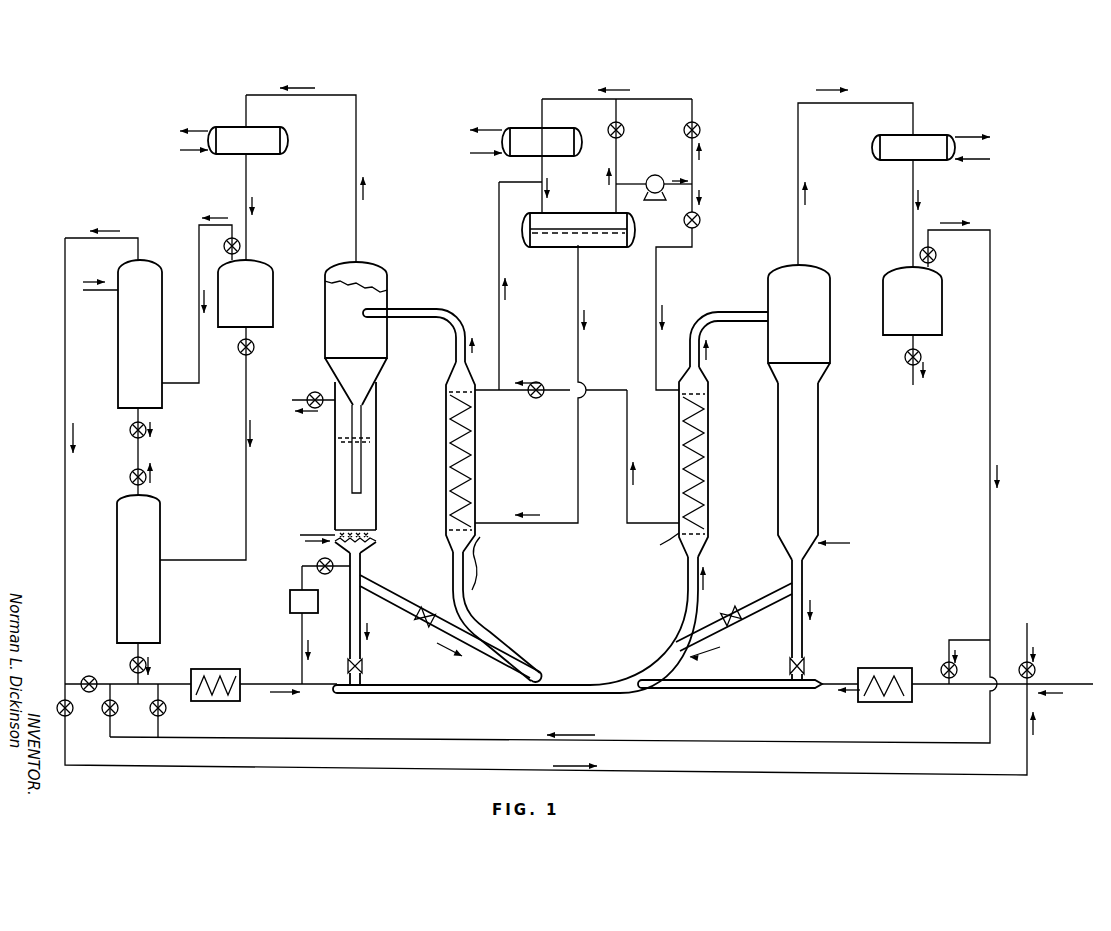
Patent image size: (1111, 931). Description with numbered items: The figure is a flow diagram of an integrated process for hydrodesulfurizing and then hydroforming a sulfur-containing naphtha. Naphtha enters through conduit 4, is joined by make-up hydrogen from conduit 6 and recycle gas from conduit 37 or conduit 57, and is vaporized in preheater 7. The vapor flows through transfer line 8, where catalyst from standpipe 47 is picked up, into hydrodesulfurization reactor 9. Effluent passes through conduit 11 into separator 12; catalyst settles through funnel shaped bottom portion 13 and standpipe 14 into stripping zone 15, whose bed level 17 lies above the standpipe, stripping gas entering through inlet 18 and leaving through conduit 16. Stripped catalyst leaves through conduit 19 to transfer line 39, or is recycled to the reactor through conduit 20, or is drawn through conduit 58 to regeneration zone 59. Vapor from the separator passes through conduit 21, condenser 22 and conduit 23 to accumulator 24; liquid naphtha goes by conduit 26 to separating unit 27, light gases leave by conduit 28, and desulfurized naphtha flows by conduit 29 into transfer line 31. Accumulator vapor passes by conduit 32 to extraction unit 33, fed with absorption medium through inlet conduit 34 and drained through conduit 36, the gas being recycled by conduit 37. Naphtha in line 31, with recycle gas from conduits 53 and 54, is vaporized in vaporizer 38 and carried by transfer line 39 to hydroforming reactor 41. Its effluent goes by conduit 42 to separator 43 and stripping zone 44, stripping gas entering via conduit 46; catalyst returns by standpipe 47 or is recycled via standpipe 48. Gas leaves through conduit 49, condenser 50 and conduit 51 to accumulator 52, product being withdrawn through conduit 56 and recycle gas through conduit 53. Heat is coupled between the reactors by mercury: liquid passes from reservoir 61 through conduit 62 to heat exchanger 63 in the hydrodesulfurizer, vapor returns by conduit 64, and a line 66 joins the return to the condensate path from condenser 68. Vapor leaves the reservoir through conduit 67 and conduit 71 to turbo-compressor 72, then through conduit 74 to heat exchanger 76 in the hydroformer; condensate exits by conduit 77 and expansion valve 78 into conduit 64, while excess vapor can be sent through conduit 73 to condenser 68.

The conduit 4 is at (920, 687).
The conduit 6 is at (1025, 652).
The preheater and vaporizer 7 is at (898, 667).
The transfer line 8 is at (468, 613).
The hydrodesulfurization reactor 9 is at (473, 533).
The conduit 11 is at (405, 312).
The separator 12 is at (385, 287).
The funnel shaped bottom portion 13 is at (374, 370).
The standpipe 14 is at (365, 432).
The stripping zone 15 is at (368, 503).
The conduit 16 is at (300, 397).
The catalyst bed level 17 is at (337, 427).
The inlet conduit and distribution means 18 is at (318, 532).
The conduit 19 is at (363, 567).
The conduit 20 is at (390, 591).
The conduit 21 is at (358, 132).
The condenser 22 is at (252, 130).
The conduit 23 is at (247, 187).
The accumulator 24 is at (270, 287).
The conduit 26 is at (245, 402).
The separating unit 27 is at (157, 523).
The conduit 28 is at (132, 468).
The conduit 29 is at (140, 648).
The transfer line 31 is at (122, 682).
The conduit 32 is at (198, 233).
The extraction unit 33 is at (158, 283).
The inlet conduit 34 is at (112, 290).
The conduit 36 is at (132, 442).
The conduit 37 is at (78, 237).
The heating and vaporizing zone 38 is at (198, 668).
The transfer line 39 is at (308, 690).
The hydroforming reactor 41 is at (707, 527).
The conduit 42 is at (748, 313).
The separator 43 is at (825, 303).
The stripping zone 44 is at (812, 410).
The conduit 46 is at (823, 543).
The standpipe 47 is at (803, 568).
The standpipe 48 is at (745, 607).
The conduit 49 is at (797, 133).
The condenser 50 is at (920, 138).
The conduit 51 is at (915, 180).
The accumulator 52 is at (933, 300).
The conduit 53 is at (122, 694).
The conduit 54 is at (175, 695).
The conduit 56 is at (915, 340).
The conduit 57 is at (968, 640).
The conduit 58 is at (303, 565).
The regeneration zone 59 is at (290, 605).
The reservoir 61 is at (590, 248).
The conduit 62 is at (573, 342).
The heat exchanger 63 is at (473, 430).
The conduit 64 is at (500, 342).
The line 66 is at (538, 202).
The conduit 67 is at (613, 123).
The condenser 68 is at (538, 127).
The conduit 71 is at (630, 183).
The two-stage turbo-compressor 72 is at (652, 177).
The conduit 73 is at (695, 102).
The conduit 74 is at (693, 238).
The heat exchanger 76 is at (705, 427).
The conduit 77 is at (627, 478).
The expansion valve 78 is at (535, 398).